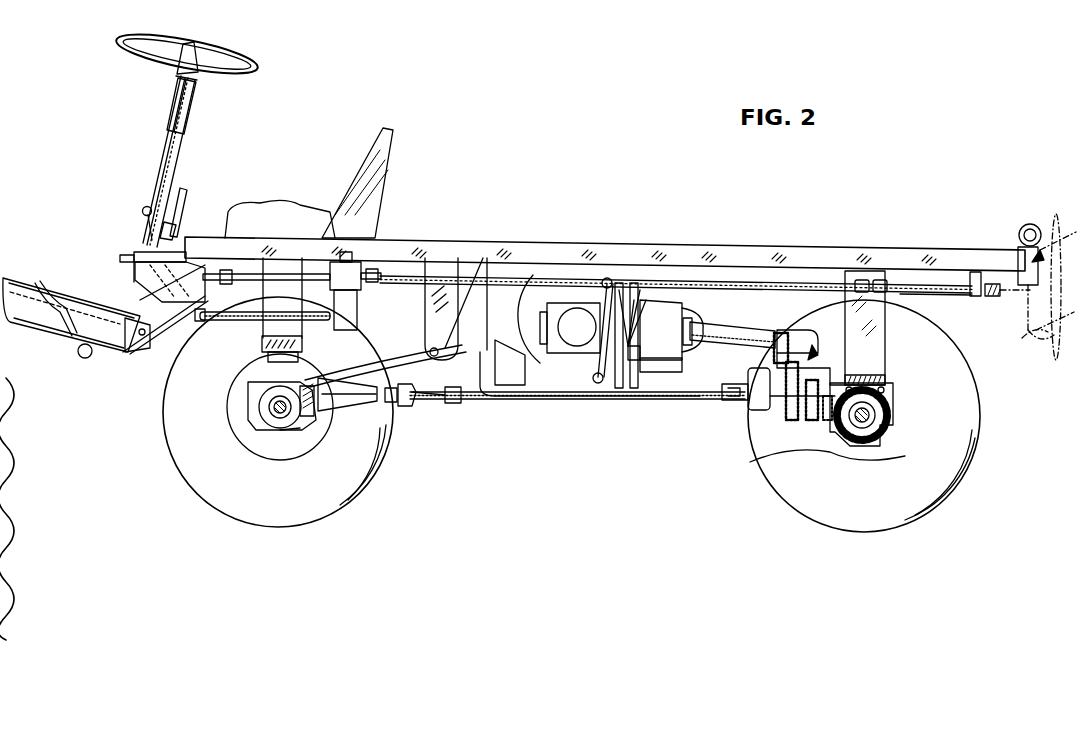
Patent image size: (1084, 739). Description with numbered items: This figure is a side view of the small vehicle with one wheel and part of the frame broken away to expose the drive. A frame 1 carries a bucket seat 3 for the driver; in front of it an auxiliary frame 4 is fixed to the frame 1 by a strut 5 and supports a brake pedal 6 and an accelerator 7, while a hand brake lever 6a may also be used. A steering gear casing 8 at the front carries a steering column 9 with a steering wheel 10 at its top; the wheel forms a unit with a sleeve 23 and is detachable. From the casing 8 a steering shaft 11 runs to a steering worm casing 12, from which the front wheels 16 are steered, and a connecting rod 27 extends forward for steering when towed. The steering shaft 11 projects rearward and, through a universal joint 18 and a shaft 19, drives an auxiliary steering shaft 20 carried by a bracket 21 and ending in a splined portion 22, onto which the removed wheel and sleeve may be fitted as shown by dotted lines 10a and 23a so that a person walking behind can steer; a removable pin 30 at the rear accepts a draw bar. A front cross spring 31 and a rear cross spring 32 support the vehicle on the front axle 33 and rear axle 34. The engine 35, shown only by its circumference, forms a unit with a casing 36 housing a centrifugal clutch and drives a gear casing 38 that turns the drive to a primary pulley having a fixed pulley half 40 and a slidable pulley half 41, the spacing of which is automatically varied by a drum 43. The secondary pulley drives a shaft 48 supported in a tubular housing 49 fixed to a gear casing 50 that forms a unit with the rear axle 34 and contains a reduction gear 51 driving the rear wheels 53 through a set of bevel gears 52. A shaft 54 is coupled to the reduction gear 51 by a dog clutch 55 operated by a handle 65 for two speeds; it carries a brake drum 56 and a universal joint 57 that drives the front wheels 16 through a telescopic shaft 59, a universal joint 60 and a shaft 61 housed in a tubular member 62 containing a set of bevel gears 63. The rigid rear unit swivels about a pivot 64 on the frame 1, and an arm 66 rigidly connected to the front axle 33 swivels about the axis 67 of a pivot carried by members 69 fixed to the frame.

The frame 1 is at (503, 252).
The bucket seat 3 is at (266, 214).
The auxiliary frame 4 is at (40, 340).
The strut 5 is at (135, 343).
The brake pedal 6 is at (60, 308).
The hand brake lever 6a is at (179, 192).
The accelerator 7 is at (28, 322).
The steering gear casing 8 is at (131, 257).
The steering column 9 is at (163, 172).
The steering wheel 10 is at (250, 75).
The steering wheel (dotted-line position) 10a is at (1064, 224).
The steering shaft 11 is at (244, 283).
The steering worm casing 12 is at (352, 268).
The front wheels 16 is at (172, 453).
The universal joint 18 is at (856, 280).
The shaft 19 is at (770, 280).
The auxiliary steering shaft 20 is at (938, 293).
The bracket 21 is at (970, 290).
The splined portion 22 is at (993, 297).
The sleeve 23 is at (178, 100).
The sleeve (dotted-line position) 23a is at (1022, 325).
The connecting rod 27 is at (232, 320).
The removable pin 30 is at (1018, 250).
The front cross spring 31 is at (268, 345).
The rear cross spring 32 is at (878, 352).
The front axle 33 is at (250, 397).
The rear axle 34 is at (900, 422).
The engine 35 is at (496, 305).
The clutch casing 36 is at (593, 304).
The gear casing 38 is at (570, 338).
The fixed pulley half 40 is at (620, 380).
The slidable pulley half 41 is at (634, 390).
The drum 43 is at (665, 364).
The shaft 48 is at (782, 335).
The tubular housing 49 is at (722, 330).
The gear casing 50 is at (805, 330).
The reduction gear 51 is at (812, 348).
The set of bevel gears 52 is at (842, 437).
The rear wheels 53 is at (958, 442).
The shaft 54 is at (780, 405).
The dog clutch 55 is at (800, 412).
The drum 56 is at (758, 410).
The universal joint 57 is at (732, 402).
The telescopic shaft 59 is at (680, 400).
The universal joint 60 is at (403, 406).
The shaft 61 is at (308, 412).
The tubular member 62 is at (352, 405).
The set of bevel gears 63 is at (285, 428).
The pivot 64 is at (645, 395).
The handle 65 is at (174, 223).
The arm 66 is at (394, 356).
The axis 67 is at (440, 356).
The members 69 is at (432, 302).